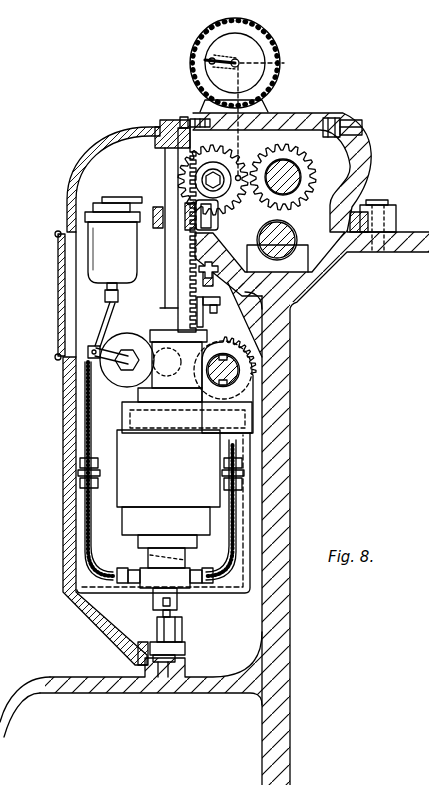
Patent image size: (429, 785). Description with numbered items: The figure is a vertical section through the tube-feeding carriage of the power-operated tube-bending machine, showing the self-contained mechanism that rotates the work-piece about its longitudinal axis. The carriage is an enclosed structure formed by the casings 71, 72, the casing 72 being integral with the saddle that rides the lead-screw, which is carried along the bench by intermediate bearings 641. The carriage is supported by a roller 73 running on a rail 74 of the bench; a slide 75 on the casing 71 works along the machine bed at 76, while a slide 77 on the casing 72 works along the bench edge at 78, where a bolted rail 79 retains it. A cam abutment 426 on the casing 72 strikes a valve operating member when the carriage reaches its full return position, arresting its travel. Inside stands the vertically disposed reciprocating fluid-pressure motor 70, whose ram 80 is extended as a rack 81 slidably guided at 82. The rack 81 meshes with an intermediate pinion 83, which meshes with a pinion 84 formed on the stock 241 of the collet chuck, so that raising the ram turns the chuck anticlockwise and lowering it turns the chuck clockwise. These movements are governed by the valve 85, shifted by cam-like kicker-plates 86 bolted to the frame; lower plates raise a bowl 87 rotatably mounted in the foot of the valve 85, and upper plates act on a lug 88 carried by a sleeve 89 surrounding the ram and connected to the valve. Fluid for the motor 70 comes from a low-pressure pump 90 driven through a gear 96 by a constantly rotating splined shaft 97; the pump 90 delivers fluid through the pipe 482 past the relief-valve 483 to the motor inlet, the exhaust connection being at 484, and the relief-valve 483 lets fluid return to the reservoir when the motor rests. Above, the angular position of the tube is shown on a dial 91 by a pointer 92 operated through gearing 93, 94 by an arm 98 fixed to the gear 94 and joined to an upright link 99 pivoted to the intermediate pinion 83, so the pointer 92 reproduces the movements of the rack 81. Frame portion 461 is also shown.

The reciprocating fluid-pressure motor 70 is at (120, 500).
The casing 71 is at (80, 163).
The casing 72 is at (335, 168).
The roller 73 is at (214, 215).
The rail 74 is at (216, 237).
The slide 75 is at (138, 658).
The machine bed surface 76 is at (158, 664).
The slide 77 is at (350, 228).
The bench edge 78 is at (358, 234).
The rail 79 is at (370, 212).
The ram 80 is at (160, 308).
The rack 81 is at (165, 168).
The rack guide 82 is at (160, 126).
The intermediate pinion 83 is at (221, 167).
The pinion 84 is at (300, 192).
The valve 85 is at (153, 600).
The kicker-plates 86 is at (205, 318).
The bowl 87 is at (172, 612).
The lug 88 is at (165, 332).
The sleeve 89 is at (130, 383).
The pump 90 is at (107, 306).
The dial 91 is at (194, 88).
The pointer 92 is at (205, 62).
The gearing 93 is at (240, 61).
The gear 94 is at (234, 60).
The gear 96 is at (262, 358).
The splined shaft 97 is at (226, 362).
The arm 98 is at (272, 61).
The upright link 99 is at (240, 140).
The stock 241 is at (281, 160).
The cam abutment 426 is at (364, 128).
The frame 461 is at (252, 495).
The pipe 482 is at (104, 347).
The relief-valve 483 is at (136, 285).
The exhaust connection 484 is at (232, 455).
The intermediate bearings 641 is at (300, 252).